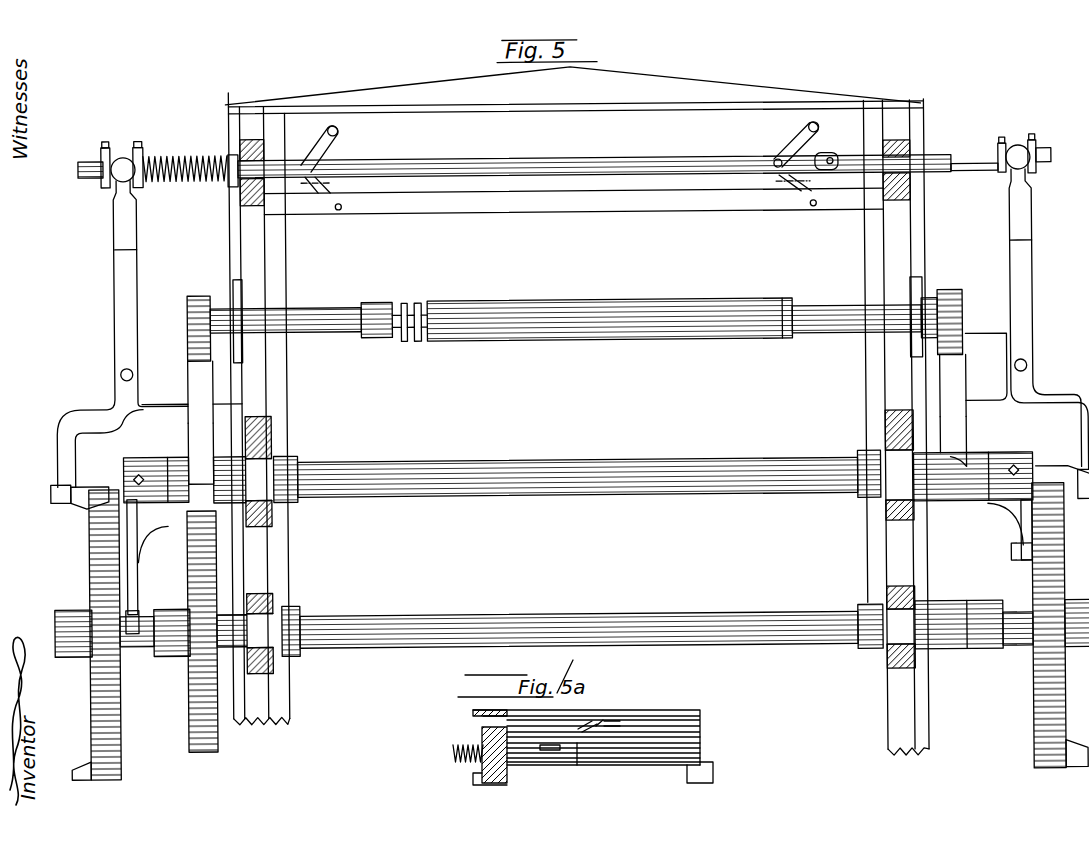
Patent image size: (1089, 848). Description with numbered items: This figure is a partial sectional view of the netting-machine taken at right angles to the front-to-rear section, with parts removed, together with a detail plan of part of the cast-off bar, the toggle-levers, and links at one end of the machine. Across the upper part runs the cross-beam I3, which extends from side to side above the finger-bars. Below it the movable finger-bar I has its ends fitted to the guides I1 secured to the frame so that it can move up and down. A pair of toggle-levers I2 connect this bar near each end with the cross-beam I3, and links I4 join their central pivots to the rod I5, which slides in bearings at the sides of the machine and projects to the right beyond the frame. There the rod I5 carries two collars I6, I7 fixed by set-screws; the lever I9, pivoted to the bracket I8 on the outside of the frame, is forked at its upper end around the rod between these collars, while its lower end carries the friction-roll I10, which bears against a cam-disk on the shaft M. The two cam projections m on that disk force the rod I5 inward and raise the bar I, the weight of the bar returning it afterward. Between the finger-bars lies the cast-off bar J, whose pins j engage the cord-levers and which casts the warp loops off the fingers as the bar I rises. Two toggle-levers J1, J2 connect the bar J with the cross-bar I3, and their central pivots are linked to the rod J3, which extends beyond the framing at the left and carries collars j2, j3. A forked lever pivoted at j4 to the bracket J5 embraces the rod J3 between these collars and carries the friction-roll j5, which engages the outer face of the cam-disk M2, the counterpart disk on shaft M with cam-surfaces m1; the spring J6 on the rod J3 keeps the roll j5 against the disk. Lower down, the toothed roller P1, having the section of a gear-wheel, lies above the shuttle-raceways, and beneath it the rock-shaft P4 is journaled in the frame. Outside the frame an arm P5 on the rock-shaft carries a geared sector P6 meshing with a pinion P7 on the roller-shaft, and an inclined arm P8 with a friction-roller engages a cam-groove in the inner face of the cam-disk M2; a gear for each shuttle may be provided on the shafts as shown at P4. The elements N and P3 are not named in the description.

In FIG. 5, the movable finger-bar I is at (693, 224).
In FIG. 5A, the movable finger-bar I is at (702, 731).
In FIG. 5A, the guides I1 is at (480, 733).
In FIG. 5, the toggle-levers I2 is at (326, 145).
In FIG. 5A, the toggle-levers I2 is at (583, 728).
In FIG. 5, the cross-beam I3 is at (575, 96).
In FIG. 5A, the links I4 is at (612, 722).
In FIG. 5, the rod or bar I5 is at (976, 166).
In FIG. 5, the collar I6 is at (1005, 147).
In FIG. 5, the collar I7 is at (1038, 151).
In FIG. 5, the bracket I8 is at (990, 403).
In FIG. 5, the lever I9 is at (1033, 306).
In FIG. 5, the friction-roll I10 is at (1077, 476).
In FIG. 5, the cast-off bar J is at (122, 333).
In FIG. 5A, the cast-off bar J is at (702, 743).
In FIG. 5, the toggle-lever J1 is at (338, 151).
In FIG. 5A, the toggle-lever J1 is at (577, 765).
In FIG. 5, the toggle-lever J2 is at (820, 148).
In FIG. 5A, the toggle-lever J2 is at (553, 751).
In FIG. 5, the rod J3 is at (100, 160).
In FIG. 5A, the rod J3 is at (659, 766).
In FIG. 5, the bracket J5 is at (165, 401).
In FIG. 5, the spring J6 is at (200, 154).
In FIG. 5, the pin j is at (116, 290).
In FIG. 5, the collar j2 is at (108, 144).
In FIG. 5, the collar j3 is at (144, 146).
In FIG. 5, the pivot j4 is at (121, 371).
In FIG. 5, the friction-roll j5 is at (50, 491).
In FIG. 5, the shaft M is at (53, 631).
In FIG. 5, the cam-disk M2 is at (88, 573).
In FIG. 5, the cam projections m is at (1062, 625).
In FIG. 5, the cam-surfaces m1 is at (76, 503).
In FIG. 5, the gear wheel N is at (1050, 553).
In FIG. 5, the toothed roller P1 is at (505, 340).
In FIG. 5, the shaft P3 is at (128, 457).
In FIG. 5, the rock-shaft P4 is at (1040, 456).
In FIG. 5, the arm P5 is at (196, 437).
In FIG. 5, the geared sector P6 is at (188, 351).
In FIG. 5, the pinion P7 is at (188, 309).
In FIG. 5, the arm P8 is at (150, 563).